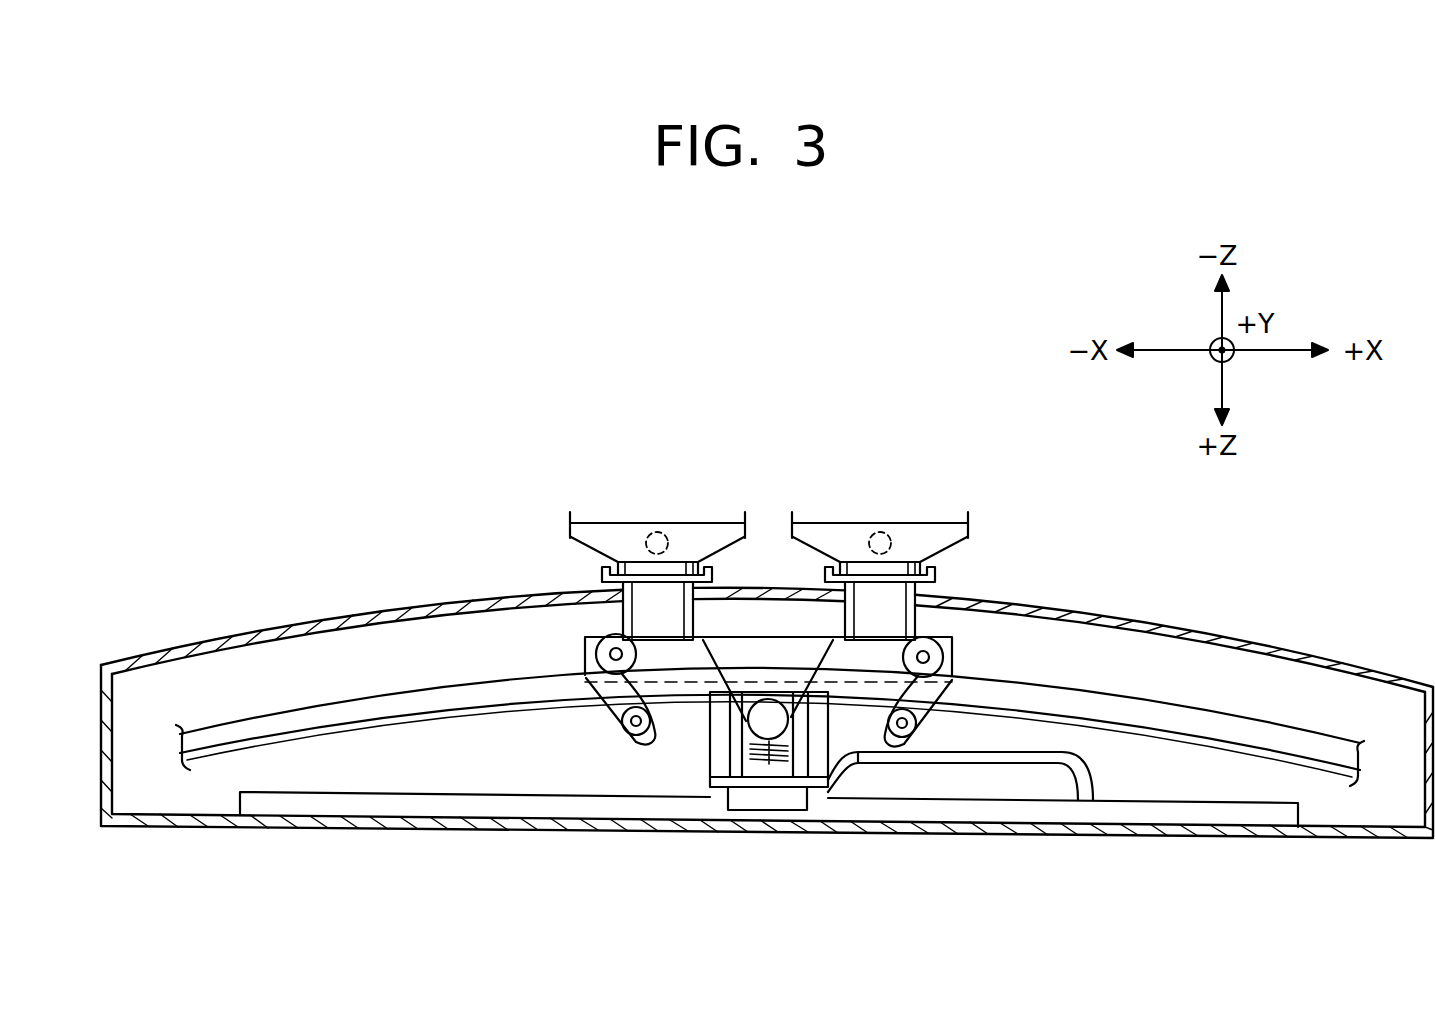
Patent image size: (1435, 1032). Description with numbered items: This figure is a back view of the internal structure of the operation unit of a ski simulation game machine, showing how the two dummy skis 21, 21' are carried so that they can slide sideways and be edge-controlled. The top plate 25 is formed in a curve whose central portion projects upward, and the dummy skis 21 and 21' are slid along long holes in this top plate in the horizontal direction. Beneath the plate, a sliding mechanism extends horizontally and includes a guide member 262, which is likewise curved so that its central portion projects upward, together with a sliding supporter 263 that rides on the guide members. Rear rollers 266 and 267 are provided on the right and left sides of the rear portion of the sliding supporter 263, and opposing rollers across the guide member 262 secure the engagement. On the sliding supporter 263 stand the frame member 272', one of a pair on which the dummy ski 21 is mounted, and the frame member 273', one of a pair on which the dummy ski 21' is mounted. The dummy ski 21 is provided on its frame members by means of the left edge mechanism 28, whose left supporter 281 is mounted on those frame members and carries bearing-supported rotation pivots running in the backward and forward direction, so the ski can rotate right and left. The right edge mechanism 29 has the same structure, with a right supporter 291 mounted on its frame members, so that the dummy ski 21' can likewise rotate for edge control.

The dummy ski 21 is at (657, 512).
The dummy ski 21' is at (880, 512).
The top plate 25 is at (1250, 640).
The left edge mechanism 28 is at (651, 522).
The right edge mechanism 29 is at (886, 522).
The guide member 262 is at (297, 727).
The sliding supporter 263 is at (733, 640).
The rear roller 266 is at (621, 675).
The rear roller 267 is at (927, 675).
The frame member 272' is at (547, 602).
The frame member 273' is at (978, 602).
The left supporter 281 is at (600, 573).
The right supporter 291 is at (950, 578).